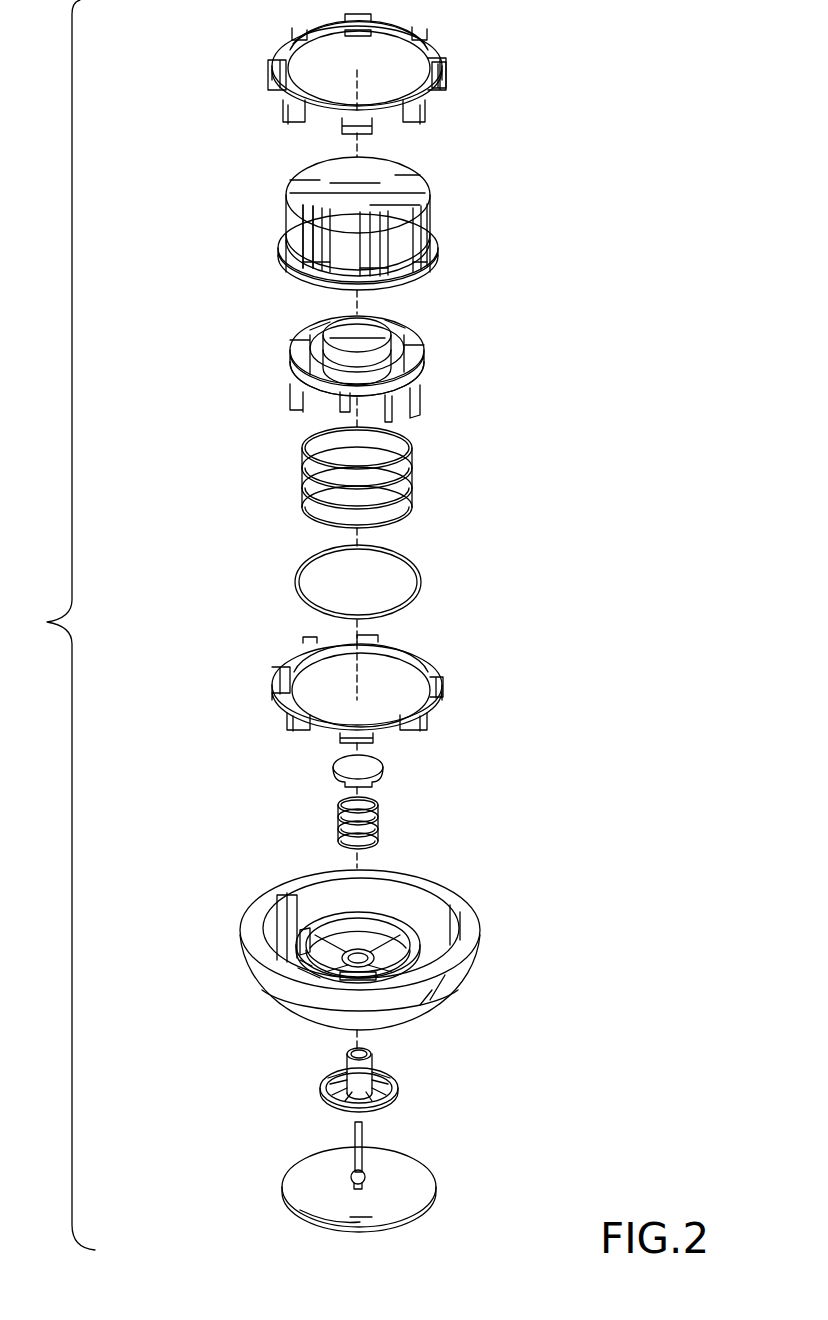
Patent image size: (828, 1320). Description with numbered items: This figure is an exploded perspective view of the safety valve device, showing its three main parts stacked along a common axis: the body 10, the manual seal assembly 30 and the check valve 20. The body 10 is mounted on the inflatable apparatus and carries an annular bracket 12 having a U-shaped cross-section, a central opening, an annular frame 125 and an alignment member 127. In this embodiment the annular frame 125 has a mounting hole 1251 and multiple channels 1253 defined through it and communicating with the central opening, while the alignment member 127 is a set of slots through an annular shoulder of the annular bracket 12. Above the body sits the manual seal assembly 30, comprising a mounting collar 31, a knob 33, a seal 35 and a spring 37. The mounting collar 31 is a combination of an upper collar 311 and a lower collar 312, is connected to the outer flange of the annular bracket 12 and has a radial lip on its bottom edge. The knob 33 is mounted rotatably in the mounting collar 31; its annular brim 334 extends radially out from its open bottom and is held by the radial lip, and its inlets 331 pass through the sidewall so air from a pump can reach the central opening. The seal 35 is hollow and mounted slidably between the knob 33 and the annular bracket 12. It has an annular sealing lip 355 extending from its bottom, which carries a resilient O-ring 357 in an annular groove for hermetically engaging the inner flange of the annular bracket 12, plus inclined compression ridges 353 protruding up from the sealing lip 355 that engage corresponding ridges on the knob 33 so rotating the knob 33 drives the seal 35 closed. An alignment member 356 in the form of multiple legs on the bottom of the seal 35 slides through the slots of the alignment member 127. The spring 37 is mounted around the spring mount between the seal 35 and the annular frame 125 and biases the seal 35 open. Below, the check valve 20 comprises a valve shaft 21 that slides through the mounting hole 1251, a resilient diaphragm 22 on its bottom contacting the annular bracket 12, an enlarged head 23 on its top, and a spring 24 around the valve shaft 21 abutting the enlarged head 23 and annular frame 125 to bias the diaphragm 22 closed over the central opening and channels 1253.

The body 10 is at (449, 1004).
The annular bracket 12 is at (427, 942).
The annular frame 125 is at (407, 943).
The mounting hole 1251 is at (297, 938).
The alignment member 127 is at (297, 963).
The channels 1253 is at (300, 973).
The check valve 20 is at (302, 1137).
The valve shaft 21 is at (397, 1093).
The diaphragm 22 is at (415, 1205).
The enlarged head 23 is at (378, 773).
The spring 24 is at (375, 828).
The manual seal assembly 30 is at (203, 27).
The mounting collar 31 is at (447, 43).
The upper collar 311 is at (432, 78).
The lower collar 312 is at (440, 672).
The knob 33 is at (423, 193).
The inlets 331 is at (410, 263).
The annular brim 334 is at (290, 263).
The seal 35 is at (417, 360).
The compression ridges 353 is at (393, 320).
The annular sealing lip 355 is at (400, 380).
The alignment member 356 is at (292, 402).
The O-ring 357 is at (422, 587).
The spring 37 is at (413, 460).